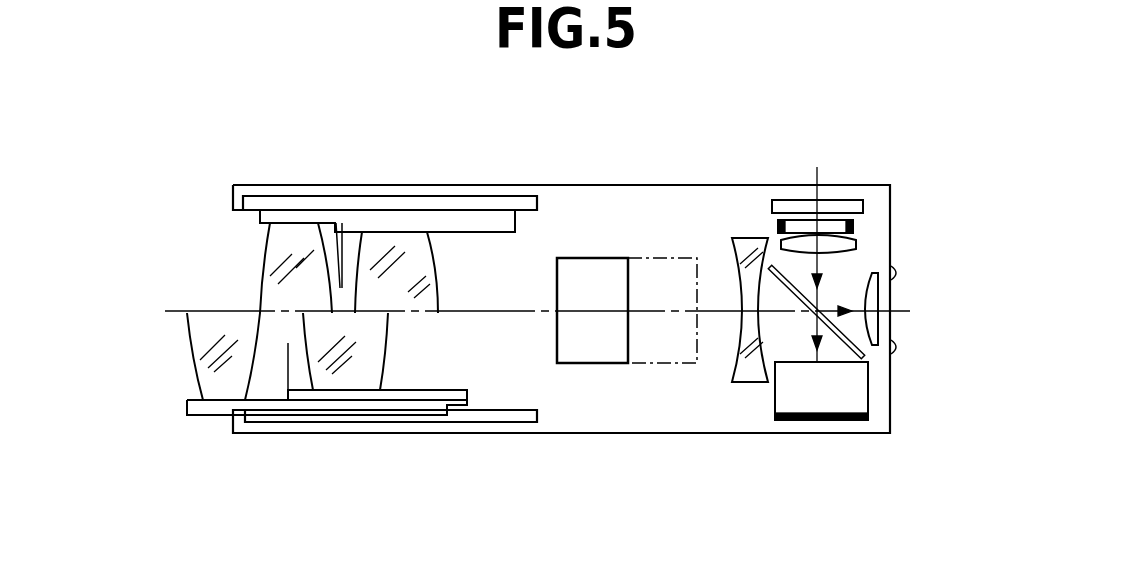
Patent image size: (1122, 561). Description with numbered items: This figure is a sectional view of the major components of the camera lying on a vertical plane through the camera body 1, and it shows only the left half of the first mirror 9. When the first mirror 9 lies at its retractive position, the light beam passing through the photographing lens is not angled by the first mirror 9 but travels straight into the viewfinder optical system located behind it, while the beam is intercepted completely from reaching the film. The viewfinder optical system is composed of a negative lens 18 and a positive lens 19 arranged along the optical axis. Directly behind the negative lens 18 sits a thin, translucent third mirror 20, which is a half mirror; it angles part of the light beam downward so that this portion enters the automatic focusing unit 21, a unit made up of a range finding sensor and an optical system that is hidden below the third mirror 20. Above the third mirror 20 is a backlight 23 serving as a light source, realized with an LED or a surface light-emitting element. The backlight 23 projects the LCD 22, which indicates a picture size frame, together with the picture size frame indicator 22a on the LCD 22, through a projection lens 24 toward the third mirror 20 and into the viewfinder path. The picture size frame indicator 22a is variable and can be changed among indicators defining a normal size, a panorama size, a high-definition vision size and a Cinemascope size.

The camera body 1 is at (605, 186).
The first mirror 9 is at (570, 270).
The negative lens 18 is at (740, 240).
The positive lens 19 is at (893, 330).
The third mirror 20 is at (855, 363).
The automatic focusing unit 21 is at (800, 405).
The LCD 22 is at (833, 221).
The picture size frame indicator 22a is at (778, 232).
The backlight 23 is at (791, 200).
The projection lens 24 is at (860, 242).